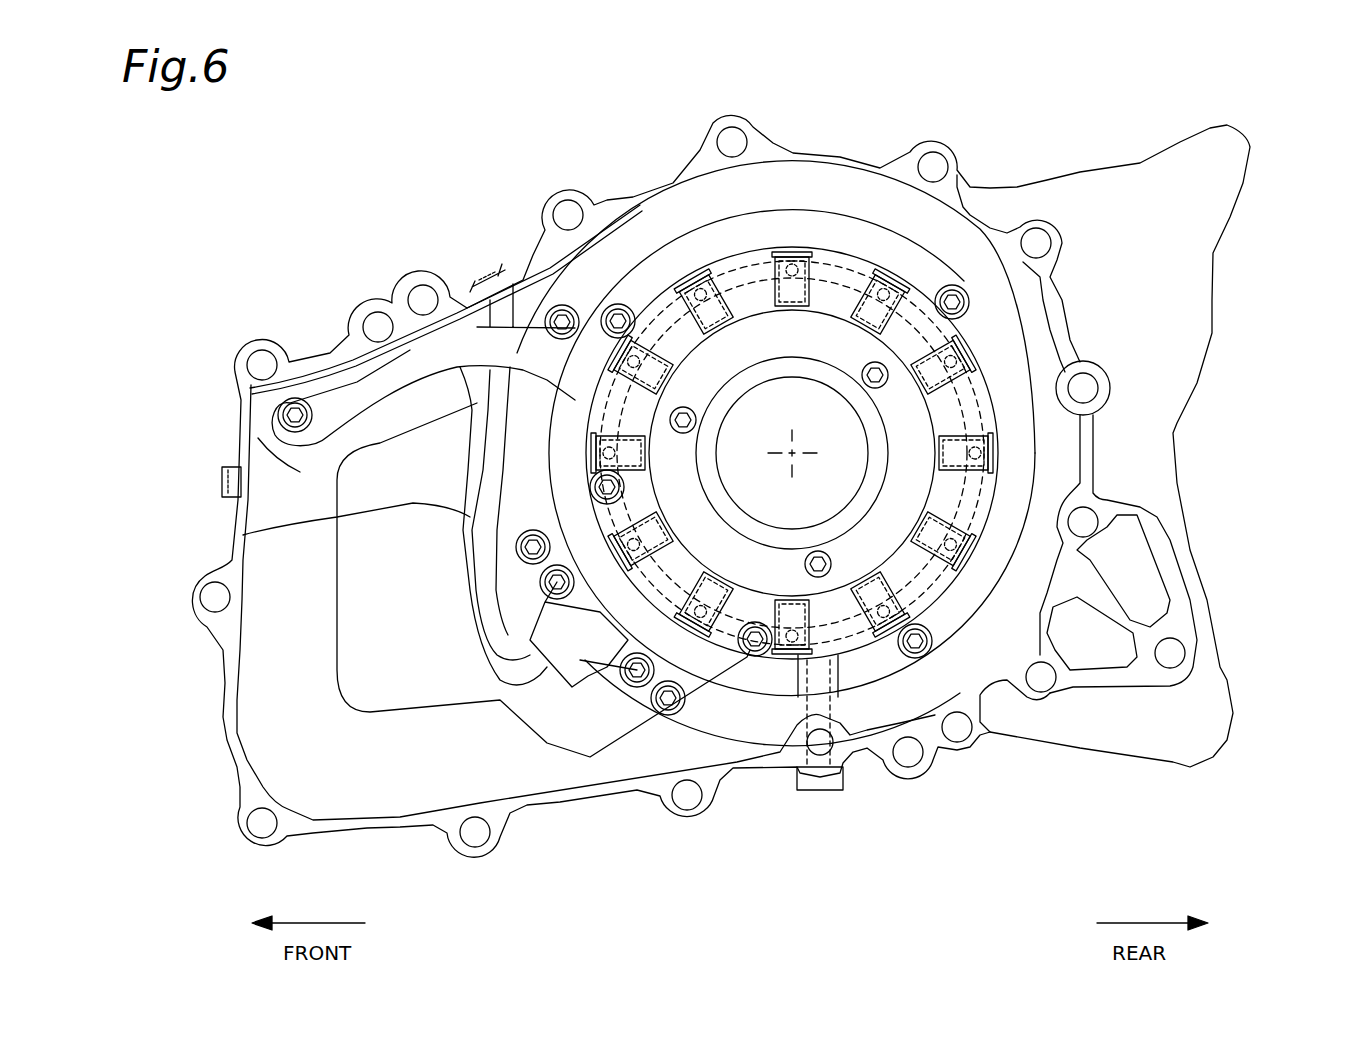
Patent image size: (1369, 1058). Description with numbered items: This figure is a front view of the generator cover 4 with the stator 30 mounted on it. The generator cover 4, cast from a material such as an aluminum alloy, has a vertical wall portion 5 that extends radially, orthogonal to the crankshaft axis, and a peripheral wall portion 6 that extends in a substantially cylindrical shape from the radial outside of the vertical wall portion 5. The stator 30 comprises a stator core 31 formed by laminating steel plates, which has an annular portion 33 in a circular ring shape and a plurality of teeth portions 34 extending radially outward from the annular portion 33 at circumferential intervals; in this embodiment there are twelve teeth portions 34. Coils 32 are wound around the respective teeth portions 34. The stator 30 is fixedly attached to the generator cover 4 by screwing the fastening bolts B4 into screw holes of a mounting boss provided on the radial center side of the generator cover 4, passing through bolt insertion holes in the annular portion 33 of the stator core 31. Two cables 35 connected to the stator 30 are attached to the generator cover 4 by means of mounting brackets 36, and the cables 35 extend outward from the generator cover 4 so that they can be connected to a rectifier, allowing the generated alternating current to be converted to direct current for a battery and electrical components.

The generator cover 4 is at (512, 259).
The vertical wall portion 5 is at (905, 707).
The peripheral wall portion 6 is at (647, 190).
The stator 30 is at (934, 373).
The stator core 31 is at (975, 357).
The coils 32 is at (940, 280).
The annular portion 33 is at (956, 411).
The teeth portions 34 is at (966, 453).
The cables 35 is at (277, 447).
The mounting brackets 36 is at (367, 377).
The fastening bolts B4 is at (862, 385).